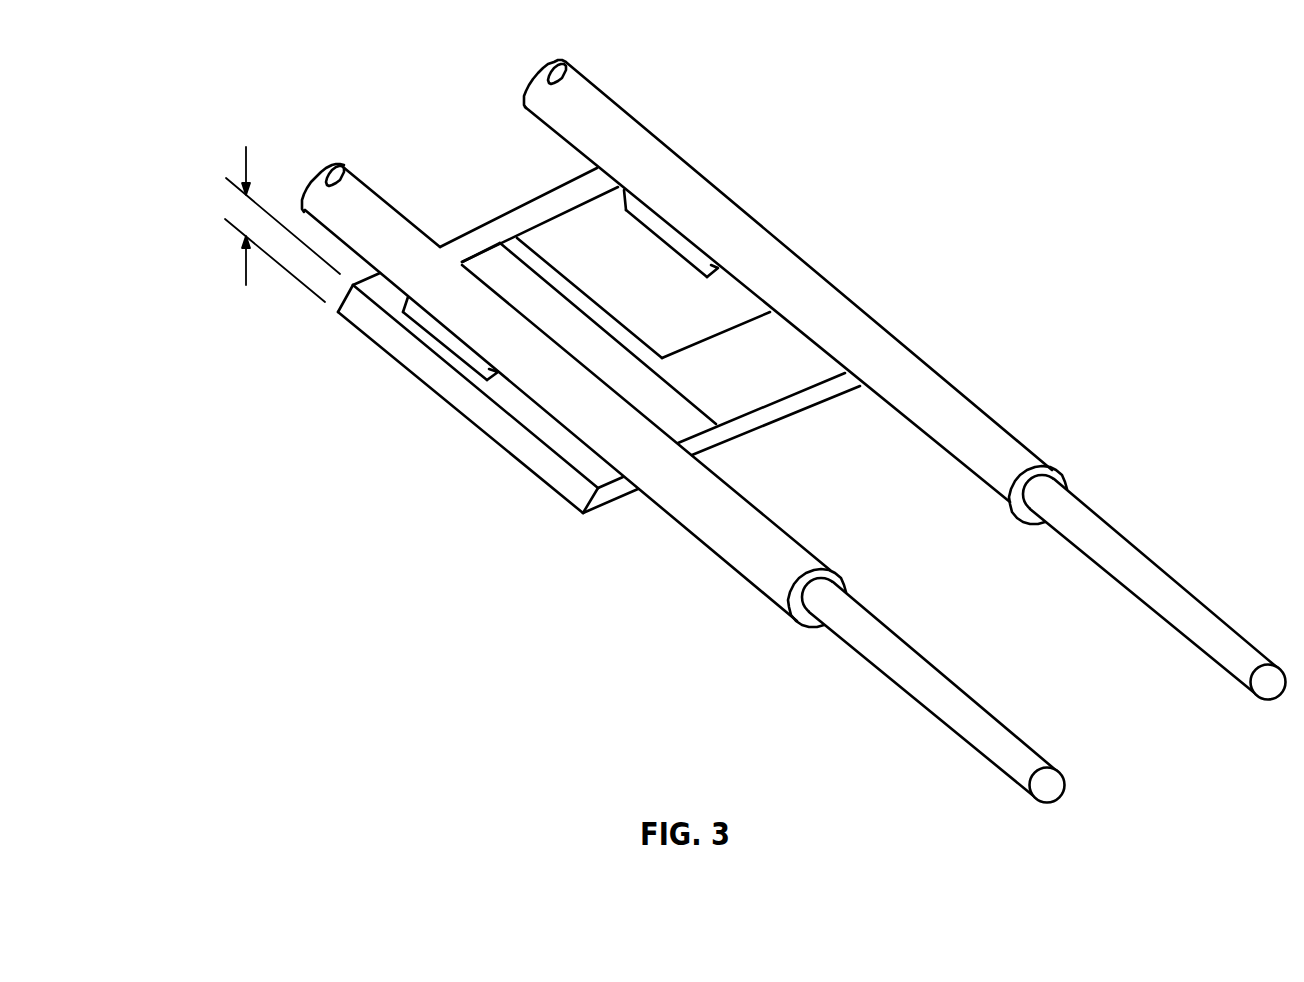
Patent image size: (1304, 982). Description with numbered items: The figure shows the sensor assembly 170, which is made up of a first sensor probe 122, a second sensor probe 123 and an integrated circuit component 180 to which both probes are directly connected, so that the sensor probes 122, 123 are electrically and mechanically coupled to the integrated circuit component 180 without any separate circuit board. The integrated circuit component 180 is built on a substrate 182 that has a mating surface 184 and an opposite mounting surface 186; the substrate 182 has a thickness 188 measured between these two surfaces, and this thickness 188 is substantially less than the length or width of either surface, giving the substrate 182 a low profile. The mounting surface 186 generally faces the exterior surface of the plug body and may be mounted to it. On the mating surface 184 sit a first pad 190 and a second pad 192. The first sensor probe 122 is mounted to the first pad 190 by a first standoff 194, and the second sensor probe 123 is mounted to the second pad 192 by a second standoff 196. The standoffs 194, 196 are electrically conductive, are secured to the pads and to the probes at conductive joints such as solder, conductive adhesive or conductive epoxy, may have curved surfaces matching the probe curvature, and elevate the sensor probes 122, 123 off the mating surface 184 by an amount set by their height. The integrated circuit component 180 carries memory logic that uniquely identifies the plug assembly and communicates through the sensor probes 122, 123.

The sensor assembly 170 is at (1000, 193).
The first sensor probe 122 is at (1013, 453).
The second sensor probe 123 is at (783, 580).
The integrated circuit component 180 is at (753, 395).
The substrate 182 is at (578, 194).
The mating surface 184 is at (777, 370).
The mounting surface 186 is at (750, 438).
The thickness 188 is at (246, 270).
The first pad 190 is at (731, 304).
The second pad 192 is at (497, 270).
The first standoff 194 is at (670, 237).
The second standoff 196 is at (446, 335).